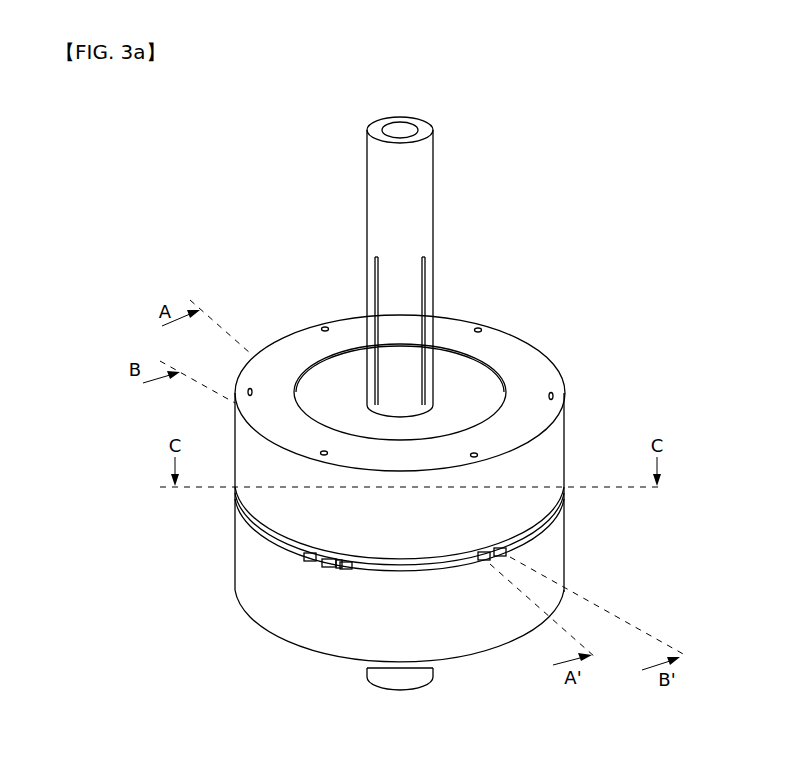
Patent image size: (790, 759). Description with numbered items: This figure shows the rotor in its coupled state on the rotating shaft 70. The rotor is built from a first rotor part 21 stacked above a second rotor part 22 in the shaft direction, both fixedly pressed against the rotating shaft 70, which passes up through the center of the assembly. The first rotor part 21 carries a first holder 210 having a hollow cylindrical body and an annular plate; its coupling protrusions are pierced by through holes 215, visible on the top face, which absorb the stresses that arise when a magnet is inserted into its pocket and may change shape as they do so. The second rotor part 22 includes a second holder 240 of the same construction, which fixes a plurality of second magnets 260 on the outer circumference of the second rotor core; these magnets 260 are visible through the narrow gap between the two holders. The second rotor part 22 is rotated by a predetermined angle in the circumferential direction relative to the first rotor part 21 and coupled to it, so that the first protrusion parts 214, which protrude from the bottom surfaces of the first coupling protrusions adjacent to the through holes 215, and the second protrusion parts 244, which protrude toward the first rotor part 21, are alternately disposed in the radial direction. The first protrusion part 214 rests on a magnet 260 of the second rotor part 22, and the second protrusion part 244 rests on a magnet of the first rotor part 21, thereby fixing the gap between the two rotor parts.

The rotating shaft 70 is at (417, 173).
The first rotor part 21 is at (435, 432).
The first holder 210 is at (554, 448).
The through hole 215 is at (480, 328).
The second rotor part 22 is at (395, 600).
The second holder 240 is at (554, 556).
The second magnet 260 is at (300, 543).
The first protrusion part 214 is at (330, 562).
The second protrusion part 244 is at (336, 568).